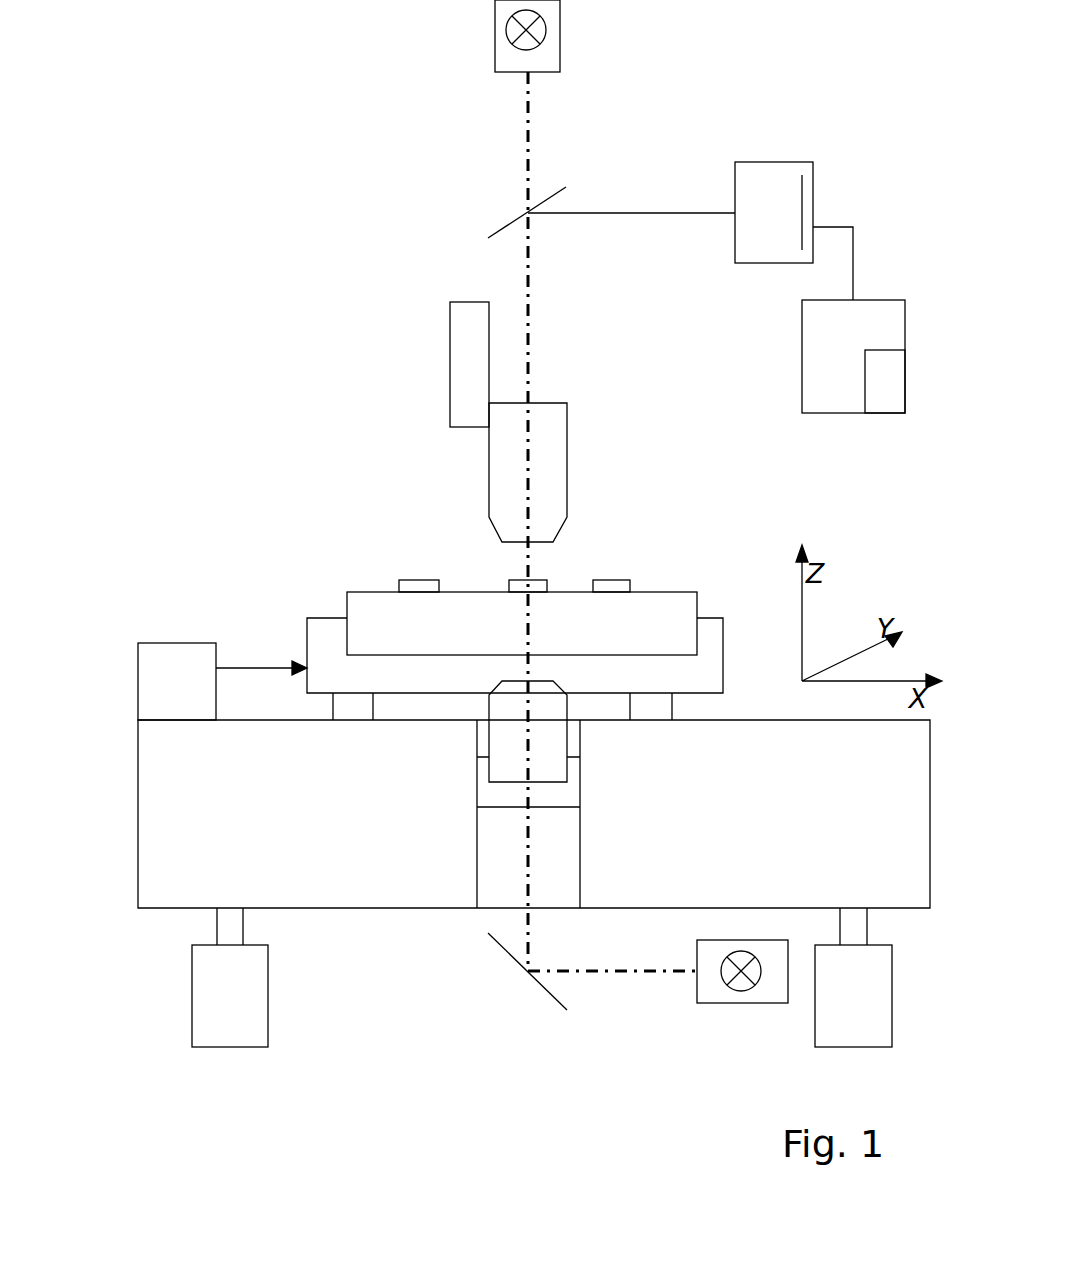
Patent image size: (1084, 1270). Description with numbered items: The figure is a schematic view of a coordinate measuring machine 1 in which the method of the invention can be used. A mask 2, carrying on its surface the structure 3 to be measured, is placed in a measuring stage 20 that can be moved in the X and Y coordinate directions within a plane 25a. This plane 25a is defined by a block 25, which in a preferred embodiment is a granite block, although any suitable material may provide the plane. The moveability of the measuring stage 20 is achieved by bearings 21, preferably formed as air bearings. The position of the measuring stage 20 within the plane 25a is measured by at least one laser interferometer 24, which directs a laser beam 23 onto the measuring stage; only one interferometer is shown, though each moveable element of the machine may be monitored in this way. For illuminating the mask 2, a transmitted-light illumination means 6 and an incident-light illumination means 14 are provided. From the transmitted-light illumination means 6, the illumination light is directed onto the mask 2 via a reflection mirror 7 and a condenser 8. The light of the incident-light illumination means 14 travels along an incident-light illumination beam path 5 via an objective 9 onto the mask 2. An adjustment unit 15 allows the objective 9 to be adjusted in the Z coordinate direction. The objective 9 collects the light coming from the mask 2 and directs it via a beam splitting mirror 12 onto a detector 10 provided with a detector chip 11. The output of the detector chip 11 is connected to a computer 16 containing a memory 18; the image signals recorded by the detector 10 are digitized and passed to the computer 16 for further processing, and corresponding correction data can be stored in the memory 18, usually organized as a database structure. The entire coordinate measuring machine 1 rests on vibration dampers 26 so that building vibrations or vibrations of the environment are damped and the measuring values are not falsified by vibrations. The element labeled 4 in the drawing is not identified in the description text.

The coordinate measuring machine 1 is at (320, 492).
The mask 2 is at (373, 604).
The structure 3 is at (540, 578).
The lower lens / objective 4 is at (500, 744).
The incident-light illumination beam path 5 is at (528, 363).
The transmitted-light illumination means 6 is at (720, 1003).
The reflection mirror 7 is at (553, 997).
The condenser 8 is at (500, 744).
The objective 9 is at (502, 465).
The detector 10 is at (760, 263).
The detector chip 11 is at (803, 198).
The beam splitting mirror 12 is at (510, 218).
The incident-light illumination means 14 is at (492, 16).
The adjustment unit 15 is at (464, 352).
The computer 16 is at (813, 364).
The memory 18 is at (892, 388).
The measuring stage 20 is at (707, 668).
The bearings 21 is at (360, 705).
The laser beam 23 is at (273, 663).
The laser interferometer 24 is at (163, 670).
The block 25 is at (165, 833).
The plane 25a is at (760, 720).
The vibration dampers 26 is at (203, 1008).